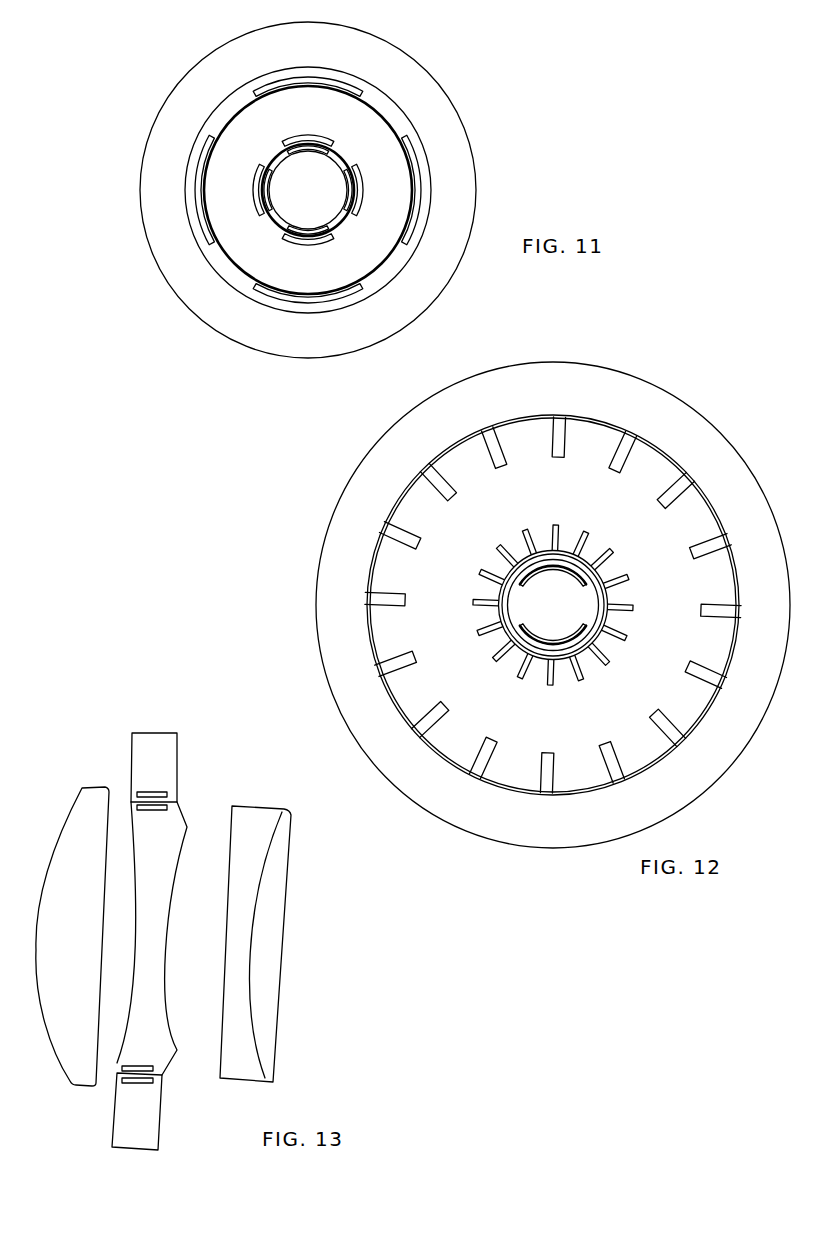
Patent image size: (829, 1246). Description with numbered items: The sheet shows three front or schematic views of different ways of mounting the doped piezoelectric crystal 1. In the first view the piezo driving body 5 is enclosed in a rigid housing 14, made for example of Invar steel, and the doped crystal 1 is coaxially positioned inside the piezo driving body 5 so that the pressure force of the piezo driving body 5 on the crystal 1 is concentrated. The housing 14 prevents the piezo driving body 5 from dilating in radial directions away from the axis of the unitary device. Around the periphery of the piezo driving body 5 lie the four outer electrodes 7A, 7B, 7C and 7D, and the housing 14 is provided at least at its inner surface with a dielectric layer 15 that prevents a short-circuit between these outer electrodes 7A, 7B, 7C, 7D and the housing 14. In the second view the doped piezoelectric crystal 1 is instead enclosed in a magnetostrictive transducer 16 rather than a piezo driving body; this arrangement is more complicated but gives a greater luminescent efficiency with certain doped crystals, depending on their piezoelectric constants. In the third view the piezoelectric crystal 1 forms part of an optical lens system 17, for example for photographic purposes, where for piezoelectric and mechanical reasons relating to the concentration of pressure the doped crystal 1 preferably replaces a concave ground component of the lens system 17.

In FIG. 11, the doped piezoelectric crystal 1 is at (307, 202).
In FIG. 12, the doped piezoelectric crystal 1 is at (554, 617).
In FIG. 13, the doped piezoelectric crystal 1 is at (163, 823).
In FIG. 11, the piezo driving body 5 is at (366, 143).
In FIG. 13, the piezo driving body 5 is at (165, 780).
In FIG. 11, the outer electrode 7A is at (363, 85).
In FIG. 11, the outer electrode 7B is at (440, 173).
In FIG. 11, the outer electrode 7C is at (245, 298).
In FIG. 11, the outer electrode 7D is at (200, 198).
In FIG. 11, the rigid housing 14 is at (462, 217).
In FIG. 12, the rigid housing 14 is at (690, 432).
In FIG. 11, the dielectric layer 15 is at (392, 277).
In FIG. 12, the magnetostrictive transducer 16 is at (586, 730).
In FIG. 13, the optical lens system 17 is at (68, 907).